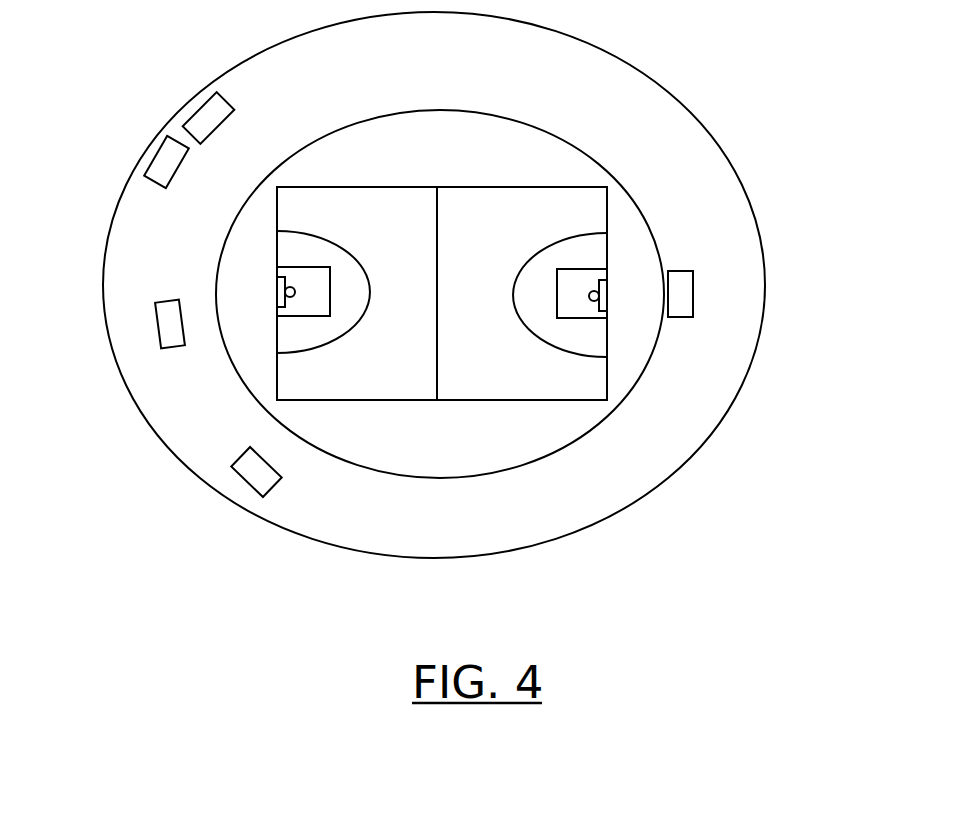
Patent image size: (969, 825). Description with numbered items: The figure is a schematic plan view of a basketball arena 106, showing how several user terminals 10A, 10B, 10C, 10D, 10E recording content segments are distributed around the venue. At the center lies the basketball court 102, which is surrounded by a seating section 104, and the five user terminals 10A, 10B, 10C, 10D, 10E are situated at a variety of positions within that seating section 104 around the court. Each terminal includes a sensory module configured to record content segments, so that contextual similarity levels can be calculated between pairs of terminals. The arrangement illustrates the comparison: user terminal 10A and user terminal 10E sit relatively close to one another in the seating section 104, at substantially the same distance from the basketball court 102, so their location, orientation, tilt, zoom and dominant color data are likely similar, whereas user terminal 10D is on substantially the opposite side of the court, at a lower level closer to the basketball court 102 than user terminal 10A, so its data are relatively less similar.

The basketball court 102 is at (442, 273).
The seating section 104 is at (440, 252).
The basketball arena 106 is at (434, 285).
The user terminal 10A is at (168, 101).
The user terminal 10B is at (118, 315).
The user terminal 10C is at (212, 485).
The user terminal 10D is at (760, 275).
The user terminal 10E is at (120, 152).